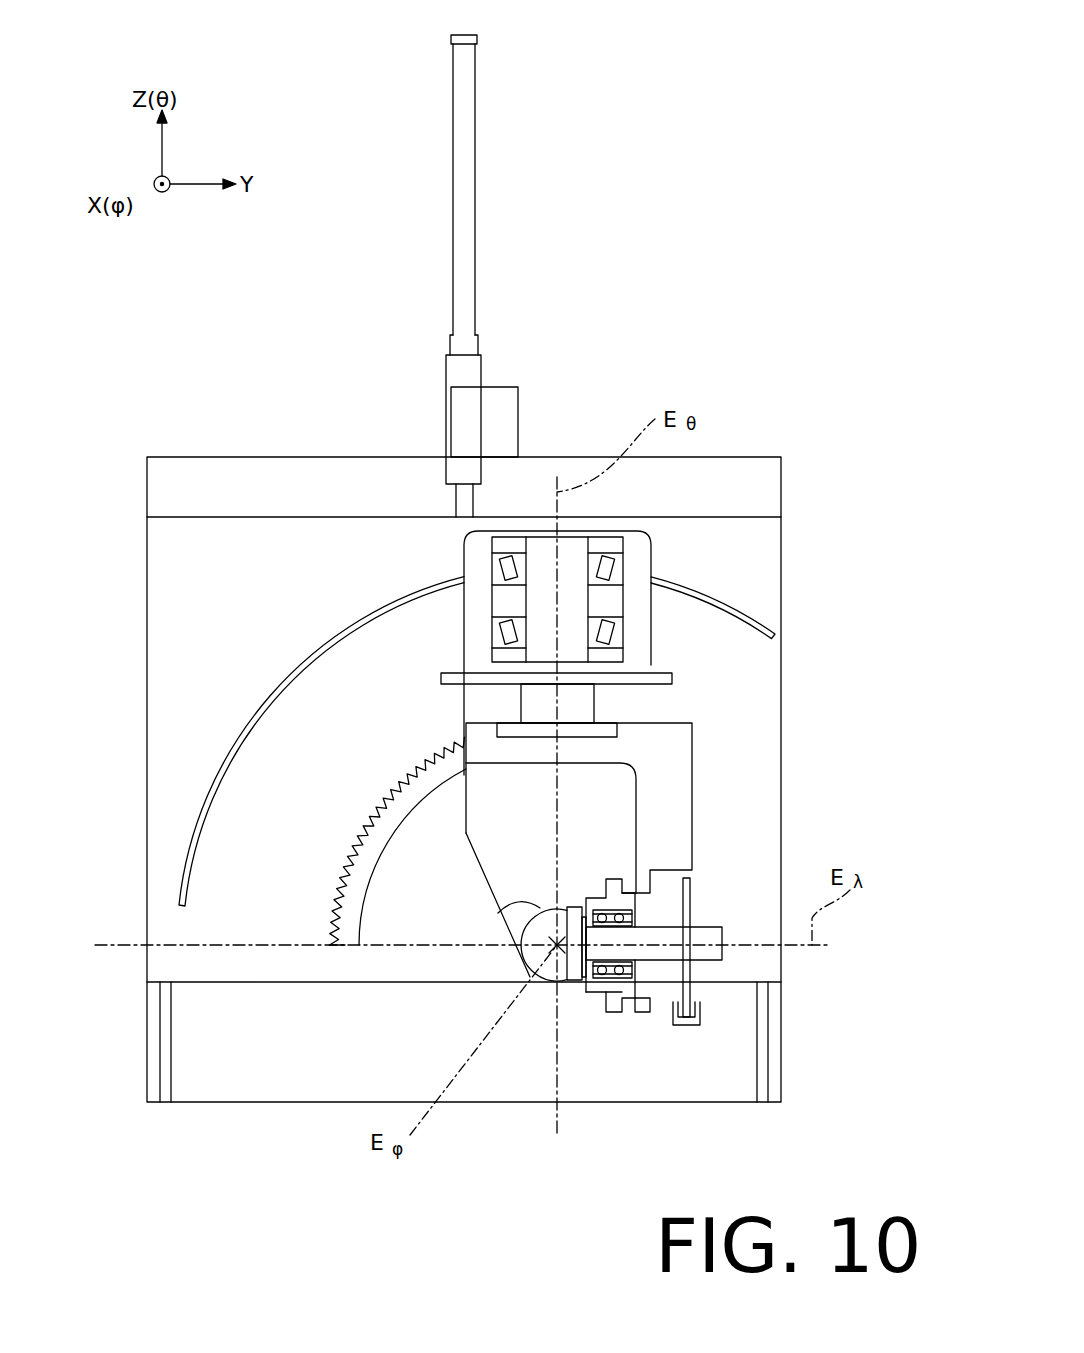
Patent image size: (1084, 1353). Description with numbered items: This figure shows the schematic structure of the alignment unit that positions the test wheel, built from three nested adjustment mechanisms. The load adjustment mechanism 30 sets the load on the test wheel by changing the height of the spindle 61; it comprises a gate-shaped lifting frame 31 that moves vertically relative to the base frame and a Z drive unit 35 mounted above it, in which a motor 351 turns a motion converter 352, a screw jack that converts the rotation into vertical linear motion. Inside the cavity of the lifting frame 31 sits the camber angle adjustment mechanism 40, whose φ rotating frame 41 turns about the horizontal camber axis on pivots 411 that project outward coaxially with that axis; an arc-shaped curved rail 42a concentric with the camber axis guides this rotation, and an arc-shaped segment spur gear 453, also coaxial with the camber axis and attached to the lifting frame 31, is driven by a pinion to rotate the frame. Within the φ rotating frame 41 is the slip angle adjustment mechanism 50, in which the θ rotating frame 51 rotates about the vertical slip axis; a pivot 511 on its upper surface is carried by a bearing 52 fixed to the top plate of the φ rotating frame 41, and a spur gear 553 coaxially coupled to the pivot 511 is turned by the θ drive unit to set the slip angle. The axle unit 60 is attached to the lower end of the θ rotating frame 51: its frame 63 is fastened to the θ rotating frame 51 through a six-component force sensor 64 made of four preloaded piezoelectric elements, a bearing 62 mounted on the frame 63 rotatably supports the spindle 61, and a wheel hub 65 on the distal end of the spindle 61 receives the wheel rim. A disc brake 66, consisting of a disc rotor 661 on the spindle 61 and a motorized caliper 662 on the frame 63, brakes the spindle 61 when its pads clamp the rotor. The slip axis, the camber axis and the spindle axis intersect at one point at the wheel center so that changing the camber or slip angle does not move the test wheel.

The lifting frame 31 is at (237, 517).
The load adjustment mechanism 30 is at (601, 276).
The Z drive unit 35 is at (601, 276).
The motion converter 352 is at (478, 290).
The motor 351 is at (518, 402).
The φ rotating frame 41 is at (640, 545).
The bearing 52 is at (627, 578).
The spur gear 553 is at (678, 680).
The pivot 511 is at (595, 710).
The θ rotating frame 51 is at (630, 750).
The slip angle adjustment mechanism 50 is at (678, 850).
The curved rail 42a is at (210, 795).
The camber angle adjustment mechanism 40 is at (354, 972).
The spur gear 453 is at (358, 942).
The pivot 411 is at (496, 912).
The axle unit 60 is at (681, 1006).
The wheel hub 65 is at (577, 978).
The bearing 62 is at (603, 907).
The spindle 61 is at (657, 962).
The frame 63 is at (600, 1012).
The six-component force sensor 64 is at (625, 1012).
The disc brake 66 is at (790, 993).
The disc rotor 661 is at (692, 992).
The motorized caliper 662 is at (702, 1013).